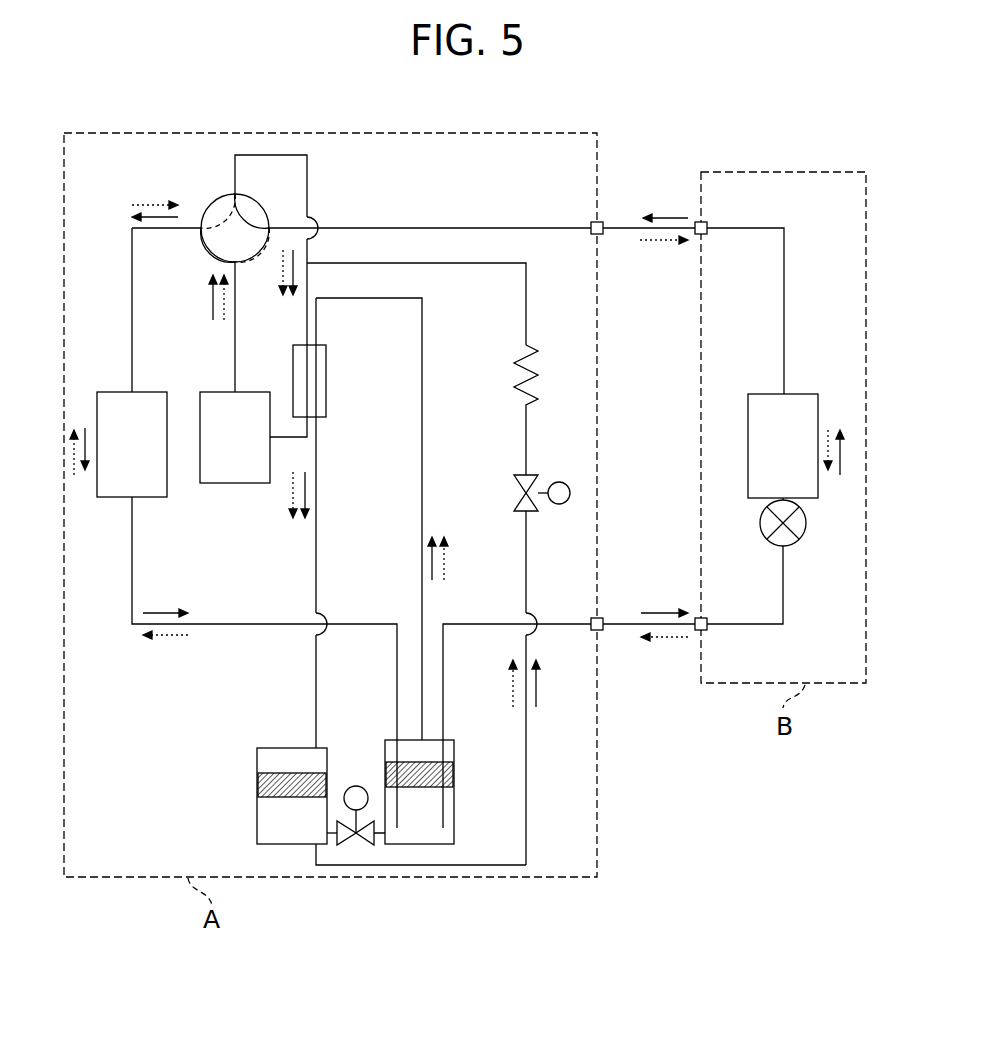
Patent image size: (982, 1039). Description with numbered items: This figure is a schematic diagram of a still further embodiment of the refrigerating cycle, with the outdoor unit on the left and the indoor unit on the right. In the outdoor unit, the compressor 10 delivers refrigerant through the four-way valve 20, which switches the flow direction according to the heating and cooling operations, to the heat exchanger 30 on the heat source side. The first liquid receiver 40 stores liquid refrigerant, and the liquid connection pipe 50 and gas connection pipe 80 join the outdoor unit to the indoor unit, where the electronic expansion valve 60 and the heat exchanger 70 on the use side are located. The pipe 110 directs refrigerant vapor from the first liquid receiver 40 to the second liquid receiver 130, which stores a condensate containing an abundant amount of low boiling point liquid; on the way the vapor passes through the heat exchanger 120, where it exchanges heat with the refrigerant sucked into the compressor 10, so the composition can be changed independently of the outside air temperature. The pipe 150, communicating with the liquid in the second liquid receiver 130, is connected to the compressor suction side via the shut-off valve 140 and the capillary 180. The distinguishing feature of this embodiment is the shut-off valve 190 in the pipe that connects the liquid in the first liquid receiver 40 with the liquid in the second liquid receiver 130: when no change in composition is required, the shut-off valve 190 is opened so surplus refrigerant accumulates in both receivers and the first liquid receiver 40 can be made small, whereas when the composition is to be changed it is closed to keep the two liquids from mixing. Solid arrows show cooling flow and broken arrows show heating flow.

The compressor 10 is at (227, 484).
The four-way valve 20 is at (217, 198).
The heat exchanger on a heat source side 30 is at (150, 391).
The first liquid receiver 40 is at (455, 808).
The liquid connection pipe 50 is at (612, 627).
The electronic expansion valve 60 is at (797, 540).
The heat exchanger on a use side 70 is at (800, 393).
The gas connection pipe 80 is at (615, 225).
The pipe 110 is at (423, 447).
The heat exchanger 120 is at (293, 368).
The second liquid receiver 130 is at (257, 810).
The shut-off valve 140 is at (530, 512).
The pipe 150 is at (527, 845).
The capillary 180 is at (535, 378).
The shut-off valve 190 is at (340, 842).